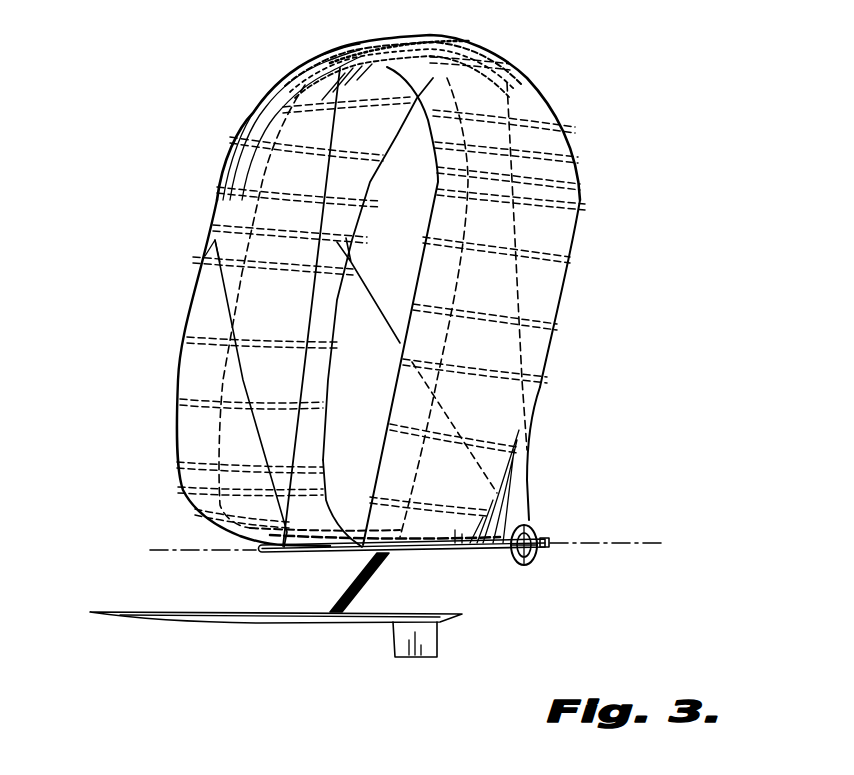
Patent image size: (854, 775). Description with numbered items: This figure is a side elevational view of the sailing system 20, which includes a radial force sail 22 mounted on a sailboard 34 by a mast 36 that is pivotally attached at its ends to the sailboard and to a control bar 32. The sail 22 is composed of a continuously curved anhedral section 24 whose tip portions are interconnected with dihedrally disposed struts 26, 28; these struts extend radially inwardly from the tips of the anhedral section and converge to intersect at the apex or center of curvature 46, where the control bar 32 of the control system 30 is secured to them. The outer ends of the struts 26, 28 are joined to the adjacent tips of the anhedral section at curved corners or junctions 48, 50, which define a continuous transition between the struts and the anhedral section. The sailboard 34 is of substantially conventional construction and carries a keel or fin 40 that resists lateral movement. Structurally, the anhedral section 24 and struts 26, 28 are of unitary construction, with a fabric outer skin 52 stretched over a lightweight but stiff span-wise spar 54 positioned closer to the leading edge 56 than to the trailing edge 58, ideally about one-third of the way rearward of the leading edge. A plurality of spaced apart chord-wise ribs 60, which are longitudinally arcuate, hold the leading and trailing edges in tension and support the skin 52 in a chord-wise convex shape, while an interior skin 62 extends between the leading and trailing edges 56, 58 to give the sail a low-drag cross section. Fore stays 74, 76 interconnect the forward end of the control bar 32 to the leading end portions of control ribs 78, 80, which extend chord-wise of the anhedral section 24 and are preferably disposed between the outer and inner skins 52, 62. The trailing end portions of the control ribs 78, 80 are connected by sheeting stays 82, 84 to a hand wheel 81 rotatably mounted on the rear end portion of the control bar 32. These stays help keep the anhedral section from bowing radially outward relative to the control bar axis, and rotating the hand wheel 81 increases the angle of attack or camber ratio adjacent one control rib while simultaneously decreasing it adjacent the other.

The sailing system 20 is at (708, 283).
The radial force sail 22 is at (160, 269).
The anhedral section 24 is at (254, 94).
The strut 26 is at (503, 397).
The strut 28 is at (332, 512).
The control system 30 is at (570, 571).
The control bar 32 is at (313, 556).
The sailboard 34 is at (285, 625).
The mast 36 is at (372, 578).
The keel or fin 40 is at (427, 647).
The apex or center of curvature 46 is at (613, 537).
The curved corner or junction 48 is at (548, 70).
The curved corner or junction 50 is at (173, 510).
The fabric outer skin 52 is at (523, 106).
The span-wise spar 54 is at (217, 393).
The leading edge 56 is at (170, 442).
The trailing edge 58 is at (363, 199).
The ribs 60 is at (245, 197).
The interior skin 62 is at (270, 311).
The fore stay 74 is at (335, 130).
The fore stay 76 is at (243, 370).
The control rib 78 is at (467, 36).
The control rib 80 is at (217, 232).
The hand wheel 81 is at (518, 565).
The sheeting stay 82 is at (532, 482).
The sheeting stay 84 is at (360, 277).